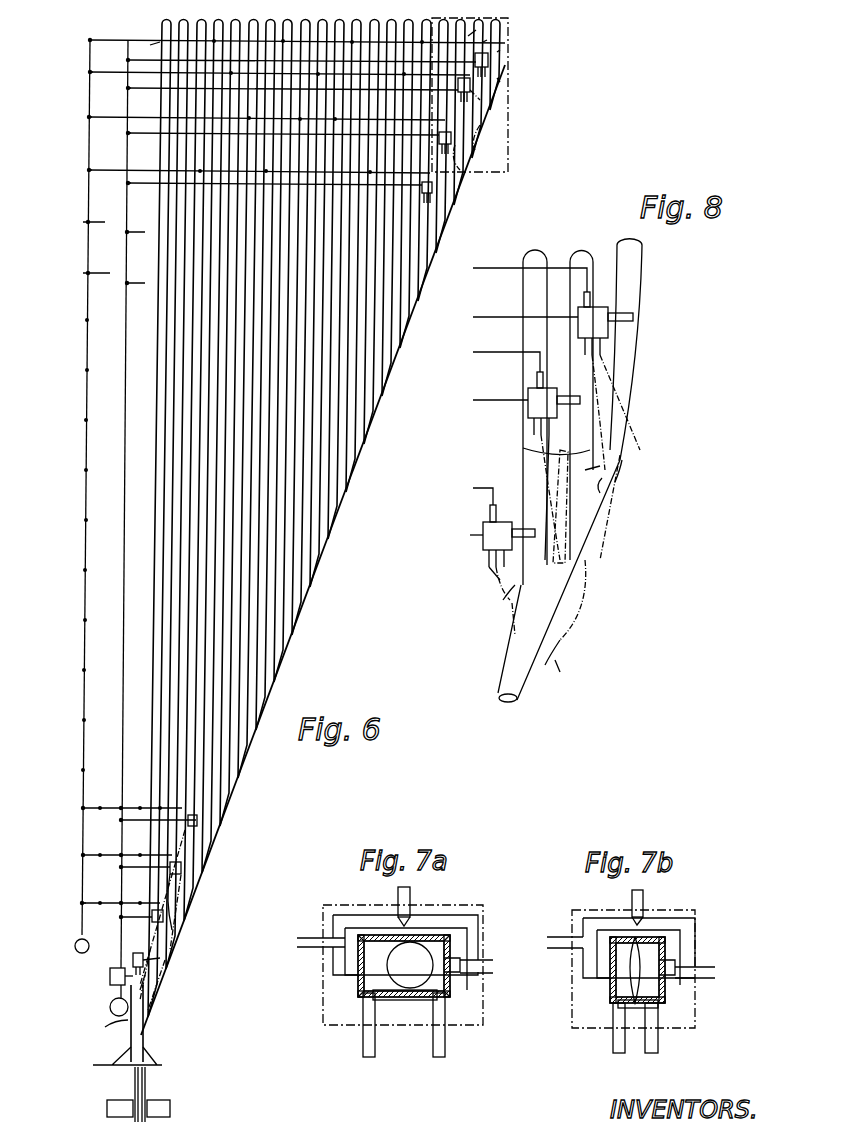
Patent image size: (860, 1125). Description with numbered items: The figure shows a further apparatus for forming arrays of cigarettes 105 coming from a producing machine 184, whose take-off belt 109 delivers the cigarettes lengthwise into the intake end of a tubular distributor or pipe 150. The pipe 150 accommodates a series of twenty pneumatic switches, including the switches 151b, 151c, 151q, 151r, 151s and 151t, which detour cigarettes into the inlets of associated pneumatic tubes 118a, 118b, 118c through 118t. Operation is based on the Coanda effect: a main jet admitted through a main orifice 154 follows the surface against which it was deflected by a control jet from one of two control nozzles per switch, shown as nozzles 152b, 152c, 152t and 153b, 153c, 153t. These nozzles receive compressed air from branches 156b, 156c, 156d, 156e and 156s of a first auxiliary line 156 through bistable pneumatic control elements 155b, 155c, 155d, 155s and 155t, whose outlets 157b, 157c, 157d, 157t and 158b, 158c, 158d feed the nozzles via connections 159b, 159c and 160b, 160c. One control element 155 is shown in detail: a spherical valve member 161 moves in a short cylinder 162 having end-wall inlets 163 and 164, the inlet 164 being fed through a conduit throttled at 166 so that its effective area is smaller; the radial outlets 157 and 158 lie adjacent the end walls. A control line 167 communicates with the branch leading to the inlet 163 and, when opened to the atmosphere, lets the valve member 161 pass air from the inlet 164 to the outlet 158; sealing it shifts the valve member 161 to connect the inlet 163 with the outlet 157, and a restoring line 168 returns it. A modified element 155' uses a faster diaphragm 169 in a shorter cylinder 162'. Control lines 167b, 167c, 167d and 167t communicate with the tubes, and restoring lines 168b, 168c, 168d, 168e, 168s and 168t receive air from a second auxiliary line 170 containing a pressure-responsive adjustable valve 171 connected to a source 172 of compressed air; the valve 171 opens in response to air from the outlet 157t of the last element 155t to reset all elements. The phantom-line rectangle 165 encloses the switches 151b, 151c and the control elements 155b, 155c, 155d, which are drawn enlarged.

In FIG. 6, the pneumatic tube 118t is at (160, 26).
In FIG. 6, the pneumatic tube 118a is at (497, 52).
In FIG. 8, the pneumatic tube 118a is at (617, 248).
In FIG. 6, the pneumatic tube 118b is at (482, 41).
In FIG. 8, the pneumatic tube 118b is at (580, 255).
In FIG. 6, the pneumatic tube 118c is at (468, 36).
In FIG. 8, the pneumatic tube 118c is at (532, 255).
In FIG. 6, the pneumatic switching device 151b is at (470, 107).
In FIG. 8, the pneumatic switching device 151b is at (560, 449).
In FIG. 8, the pneumatic switching device 151c is at (550, 598).
In FIG. 6, the pneumatic switching device 151q is at (200, 822).
In FIG. 6, the pneumatic switching device 151r is at (196, 876).
In FIG. 6, the pneumatic switching device 151s is at (175, 922).
In FIG. 6, the pneumatic switching device 151t is at (160, 972).
In FIG. 6, the control nozzle 152b is at (480, 125).
In FIG. 8, the control nozzle 152b is at (612, 486).
In FIG. 8, the control nozzle 152c is at (560, 632).
In FIG. 6, the control nozzle 152t is at (175, 985).
In FIG. 6, the control nozzle 153b is at (455, 145).
In FIG. 8, the control nozzle 153b is at (523, 448).
In FIG. 8, the control nozzle 153c is at (512, 603).
In FIG. 6, the control nozzle 153t is at (100, 1027).
In FIG. 6, the main orifice 154 is at (124, 1055).
In FIG. 7A, the bistable pneumatic control element 155 is at (417, 970).
In FIG. 7B, the modified bistable pneumatic control element 155' is at (655, 969).
In FIG. 6, the bistable pneumatic control element 155b is at (490, 60).
In FIG. 8, the bistable pneumatic control element 155b is at (608, 330).
In FIG. 6, the bistable pneumatic control element 155c is at (470, 100).
In FIG. 8, the bistable pneumatic control element 155c is at (557, 410).
In FIG. 6, the bistable pneumatic control element 155d is at (452, 160).
In FIG. 8, the bistable pneumatic control element 155d is at (490, 520).
In FIG. 6, the bistable pneumatic control element 155s is at (170, 865).
In FIG. 6, the bistable pneumatic control element 155t is at (133, 958).
In FIG. 6, the first auxiliary line 156 is at (89, 110).
In FIG. 7A, the first auxiliary line 156 is at (412, 895).
In FIG. 7B, the first auxiliary line 156 is at (645, 896).
In FIG. 6, the branch of first auxiliary line 156b is at (148, 48).
In FIG. 8, the branch of first auxiliary line 156b is at (530, 271).
In FIG. 6, the branch of first auxiliary line 156c is at (107, 61).
In FIG. 8, the branch of first auxiliary line 156c is at (506, 353).
In FIG. 6, the branch of first auxiliary line 156d is at (107, 125).
In FIG. 8, the branch of first auxiliary line 156d is at (491, 485).
In FIG. 6, the branch of first auxiliary line 156e is at (128, 165).
In FIG. 6, the branch of first auxiliary line 156s is at (105, 903).
In FIG. 7A, the outlet 157 is at (445, 1048).
In FIG. 7B, the outlet 157 is at (658, 1050).
In FIG. 8, the outlet 157b is at (610, 340).
In FIG. 8, the outlet 157c is at (540, 432).
In FIG. 8, the outlet 157d is at (496, 572).
In FIG. 6, the outlet 157t is at (155, 1000).
In FIG. 7A, the outlet 158 is at (363, 1048).
In FIG. 7B, the outlet 158 is at (613, 1050).
In FIG. 8, the outlet 158b is at (605, 355).
In FIG. 8, the outlet 158c is at (534, 430).
In FIG. 8, the outlet 158d is at (489, 565).
In FIG. 6, the connection 159b is at (470, 90).
In FIG. 8, the connection 159b is at (620, 418).
In FIG. 8, the connection 159c is at (585, 582).
In FIG. 6, the connection 160b is at (497, 78).
In FIG. 8, the connection 160b is at (568, 430).
In FIG. 8, the connection 160c is at (503, 600).
In FIG. 7A, the spherical valve member 161 is at (421, 972).
In FIG. 7A, the valve body or cylinder 162 is at (405, 1019).
In FIG. 7B, the valve body or cylinder 162' is at (606, 1023).
In FIG. 7A, the inlet 163 is at (452, 962).
In FIG. 7B, the inlet 163 is at (668, 965).
In FIG. 7A, the inlet 164 is at (370, 975).
In FIG. 7B, the inlet 164 is at (610, 970).
In FIG. 6, the phantom-line rectangle 165 is at (495, 172).
In FIG. 7A, the throttle 166 is at (345, 950).
In FIG. 7A, the control line 167 is at (482, 962).
In FIG. 7B, the control line 167 is at (705, 980).
In FIG. 8, the control line 167b is at (625, 313).
In FIG. 8, the control line 167c is at (580, 400).
In FIG. 8, the control line 167d is at (535, 533).
In FIG. 6, the control line 167t is at (165, 958).
In FIG. 7A, the restoring line 168 is at (312, 938).
In FIG. 7B, the restoring line 168 is at (562, 937).
In FIG. 6, the restoring line 168b is at (128, 58).
In FIG. 8, the restoring line 168b is at (525, 308).
In FIG. 6, the restoring line 168c is at (145, 93).
In FIG. 8, the restoring line 168c is at (500, 391).
In FIG. 6, the restoring line 168d is at (146, 146).
In FIG. 8, the restoring line 168d is at (458, 536).
In FIG. 6, the restoring line 168e is at (145, 197).
In FIG. 6, the restoring line 168s is at (128, 917).
In FIG. 6, the restoring line 168t is at (110, 975).
In FIG. 7B, the diaphragm 169 is at (660, 935).
In FIG. 6, the second auxiliary line 170 is at (122, 548).
In FIG. 6, the adjustable valve 171 is at (105, 983).
In FIG. 6, the source of compressed air 172 is at (110, 1007).
In FIG. 6, the tubular distributor 150 is at (144, 1035).
In FIG. 6, the take-off belt 109 is at (150, 1090).
In FIG. 6, the producing machine 184 is at (171, 1109).
In FIG. 8, the cigarette 105 is at (580, 548).